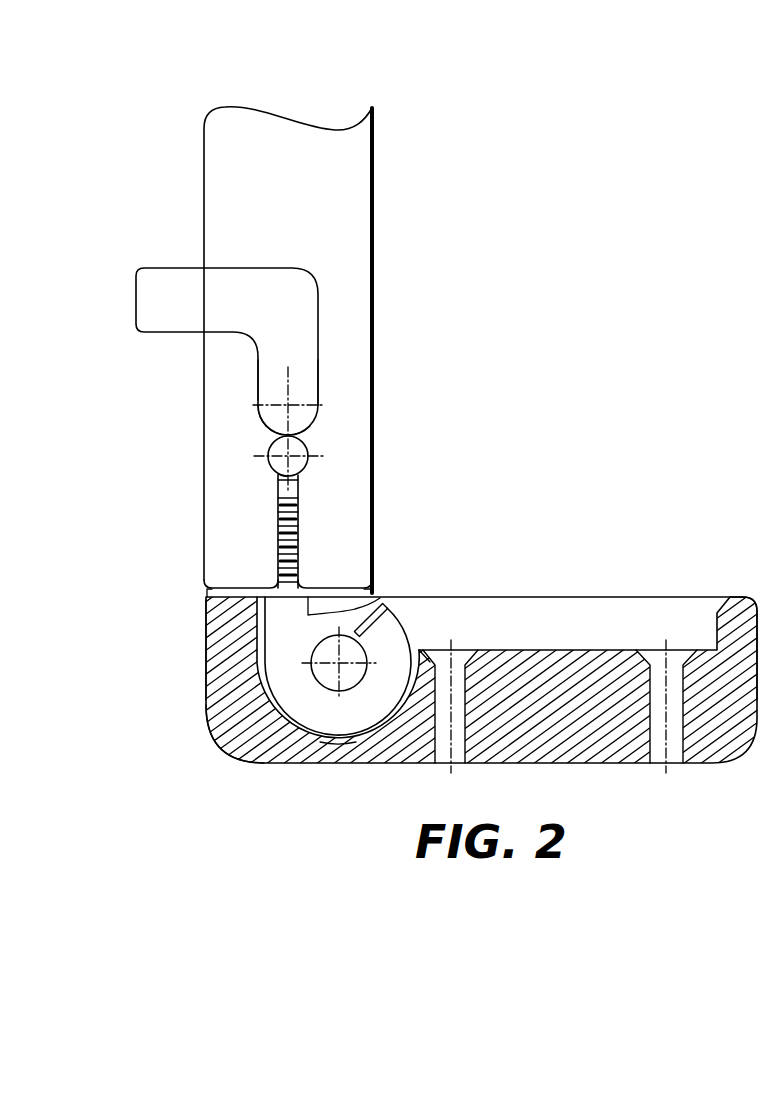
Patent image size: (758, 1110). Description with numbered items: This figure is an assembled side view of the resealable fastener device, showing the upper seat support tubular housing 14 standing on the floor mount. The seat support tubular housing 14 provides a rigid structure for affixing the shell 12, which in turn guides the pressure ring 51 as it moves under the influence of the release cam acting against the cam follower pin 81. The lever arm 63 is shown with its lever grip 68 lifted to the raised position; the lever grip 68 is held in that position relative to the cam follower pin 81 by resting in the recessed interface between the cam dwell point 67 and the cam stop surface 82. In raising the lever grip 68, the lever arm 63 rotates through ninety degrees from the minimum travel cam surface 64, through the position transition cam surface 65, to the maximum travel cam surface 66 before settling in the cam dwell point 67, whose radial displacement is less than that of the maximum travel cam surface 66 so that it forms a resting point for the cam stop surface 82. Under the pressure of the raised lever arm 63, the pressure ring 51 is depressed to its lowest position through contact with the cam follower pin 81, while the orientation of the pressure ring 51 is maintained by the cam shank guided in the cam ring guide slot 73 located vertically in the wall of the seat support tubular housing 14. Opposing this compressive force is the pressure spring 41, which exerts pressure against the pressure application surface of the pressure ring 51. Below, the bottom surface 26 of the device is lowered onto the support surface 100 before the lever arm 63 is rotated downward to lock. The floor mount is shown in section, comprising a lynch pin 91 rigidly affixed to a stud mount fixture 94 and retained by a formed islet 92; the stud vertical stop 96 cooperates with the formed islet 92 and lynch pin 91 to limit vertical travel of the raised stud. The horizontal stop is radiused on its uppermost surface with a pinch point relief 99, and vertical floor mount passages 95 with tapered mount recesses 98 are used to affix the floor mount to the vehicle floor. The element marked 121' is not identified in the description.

The seat support tubular housing 14 is at (373, 192).
The lever grip 68 is at (163, 267).
The lever arm 63 is at (257, 372).
The minimum travel cam surface 64 is at (262, 424).
The position transition cam surface 65 is at (266, 431).
The maximum travel cam surface 66 is at (378, 426).
The cam dwell point 67 is at (298, 441).
The cam stop surface 82 is at (267, 445).
The cam follower pin 81 is at (277, 470).
The cam ring guide slot 73 is at (275, 488).
The pressure ring 51 is at (293, 487).
The pressure spring 41 is at (298, 533).
The shell portion 12 is at (208, 594).
The support surface 100 is at (207, 622).
The bottom surface 26 is at (207, 642).
The stud vertical stop 96 is at (257, 652).
The stud mount fixture 94 is at (212, 723).
The lynch pin 91 is at (326, 678).
The liner bottom 121' is at (347, 780).
The formed islet 92 is at (378, 597).
The tapered mount recess 98 is at (472, 650).
The pinch point relief 99 is at (720, 600).
The floor mount passage 95 is at (468, 718).